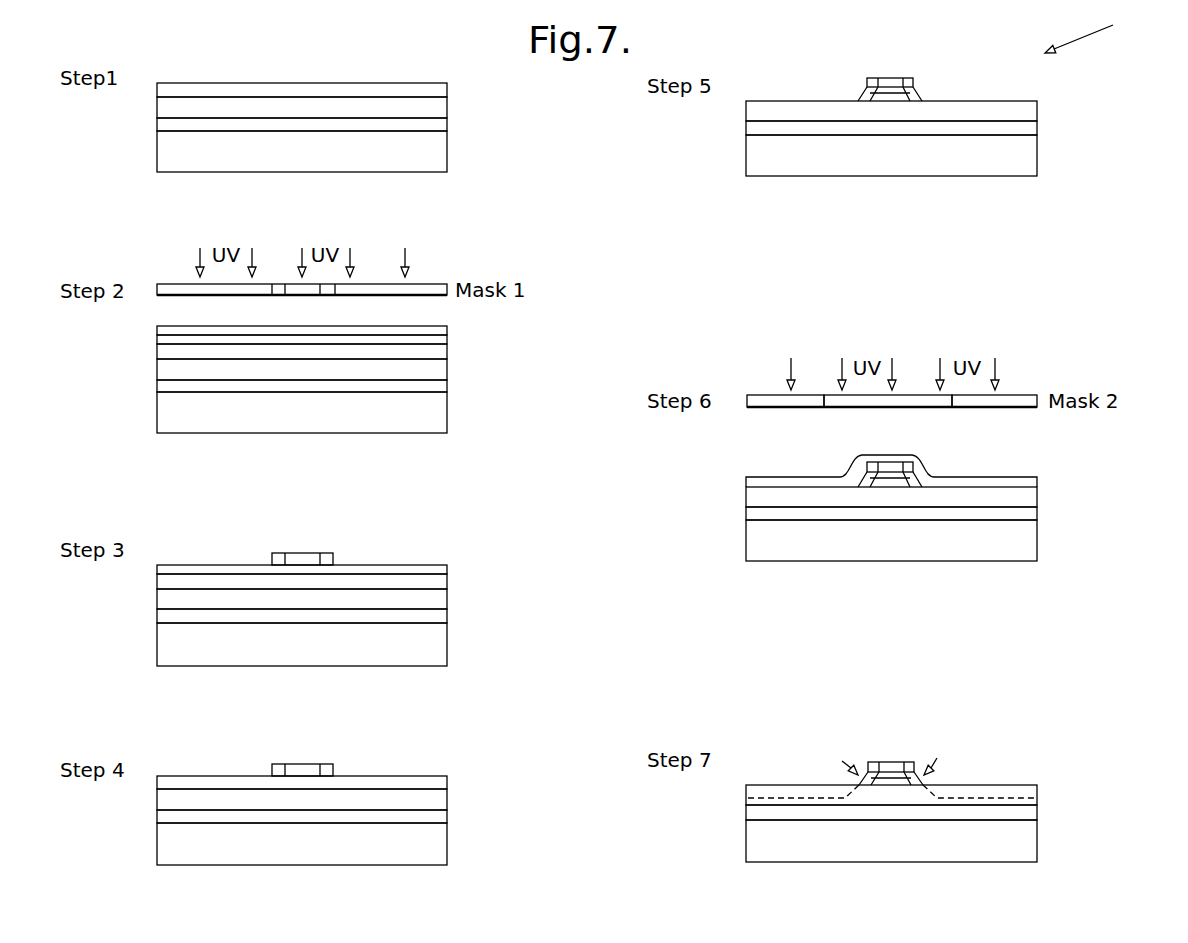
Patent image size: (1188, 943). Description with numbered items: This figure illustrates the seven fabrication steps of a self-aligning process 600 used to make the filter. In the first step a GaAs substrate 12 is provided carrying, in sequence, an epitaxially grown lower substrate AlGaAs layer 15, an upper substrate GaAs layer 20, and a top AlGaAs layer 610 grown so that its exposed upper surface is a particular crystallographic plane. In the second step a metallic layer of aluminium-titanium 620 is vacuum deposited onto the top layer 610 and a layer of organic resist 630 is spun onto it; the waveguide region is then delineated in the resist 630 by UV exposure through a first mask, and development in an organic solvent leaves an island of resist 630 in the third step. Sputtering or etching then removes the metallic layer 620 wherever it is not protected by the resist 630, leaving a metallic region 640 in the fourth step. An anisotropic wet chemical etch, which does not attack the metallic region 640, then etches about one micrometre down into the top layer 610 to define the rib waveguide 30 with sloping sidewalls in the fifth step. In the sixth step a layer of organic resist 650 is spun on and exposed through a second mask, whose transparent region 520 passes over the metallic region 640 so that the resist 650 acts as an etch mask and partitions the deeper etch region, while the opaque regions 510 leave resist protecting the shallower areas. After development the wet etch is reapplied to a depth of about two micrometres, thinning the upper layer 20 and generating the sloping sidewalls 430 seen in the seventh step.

The GaAs substrate 12 is at (760, 838).
The lower substrate AlGaAs layer 15 is at (1070, 815).
The upper substrate GaAs layer 20 is at (1070, 790).
The rib waveguide 30 is at (888, 778).
The sloping sidewalls 430 is at (885, 754).
The shallower etch regions 510 is at (1020, 400).
The deeper etch region 520 is at (760, 798).
The self-aligning process 600 is at (1101, 33).
The top AlGaAs layer 610 is at (482, 787).
The metallic layer of aluminium-titanium 620 is at (478, 578).
The organic resist layer 630 is at (332, 538).
The metallic region 640 is at (897, 762).
The organic resist layer 650 is at (1002, 480).